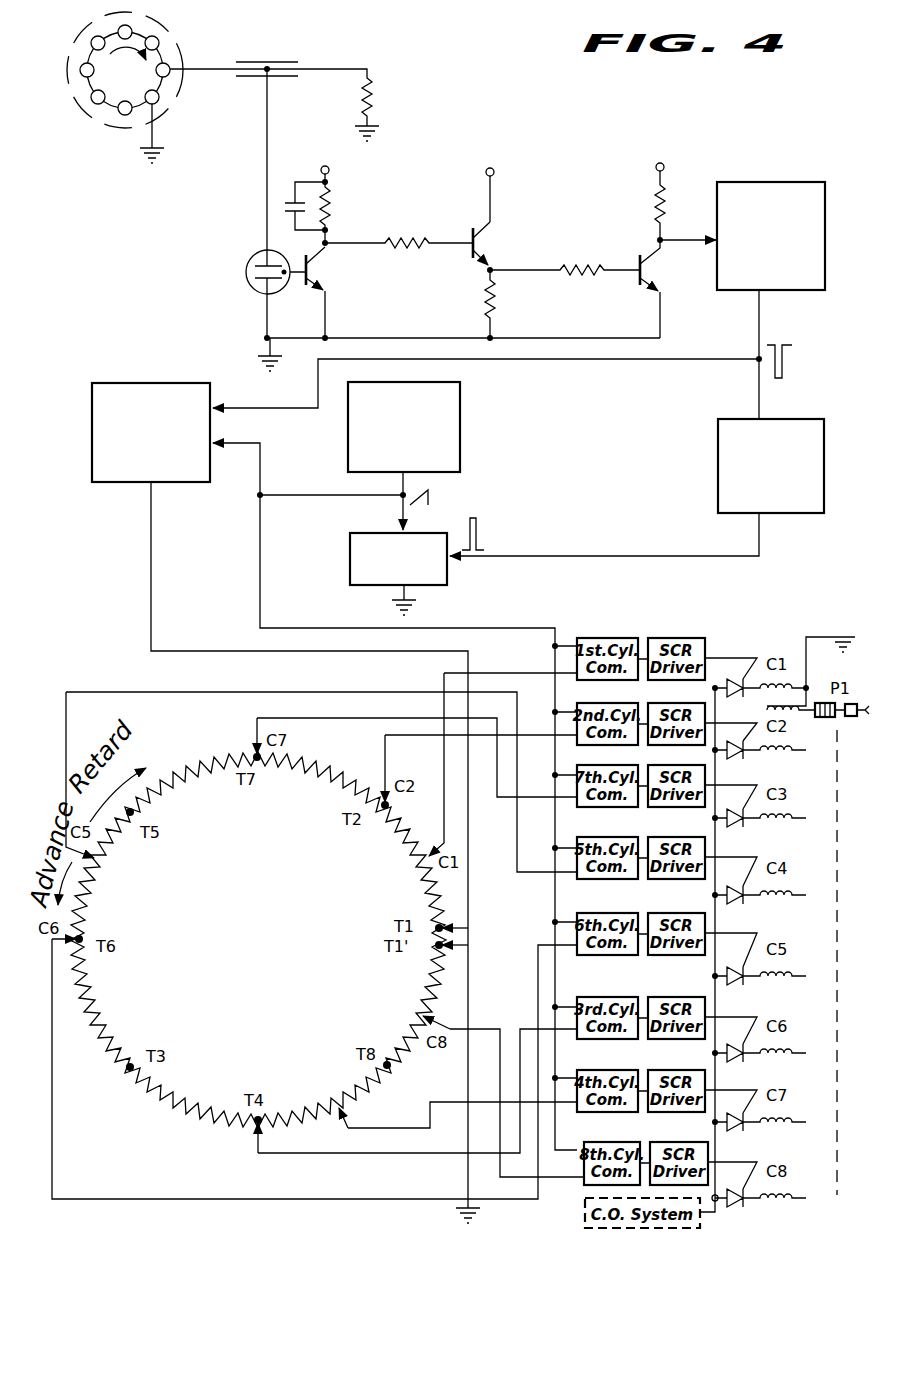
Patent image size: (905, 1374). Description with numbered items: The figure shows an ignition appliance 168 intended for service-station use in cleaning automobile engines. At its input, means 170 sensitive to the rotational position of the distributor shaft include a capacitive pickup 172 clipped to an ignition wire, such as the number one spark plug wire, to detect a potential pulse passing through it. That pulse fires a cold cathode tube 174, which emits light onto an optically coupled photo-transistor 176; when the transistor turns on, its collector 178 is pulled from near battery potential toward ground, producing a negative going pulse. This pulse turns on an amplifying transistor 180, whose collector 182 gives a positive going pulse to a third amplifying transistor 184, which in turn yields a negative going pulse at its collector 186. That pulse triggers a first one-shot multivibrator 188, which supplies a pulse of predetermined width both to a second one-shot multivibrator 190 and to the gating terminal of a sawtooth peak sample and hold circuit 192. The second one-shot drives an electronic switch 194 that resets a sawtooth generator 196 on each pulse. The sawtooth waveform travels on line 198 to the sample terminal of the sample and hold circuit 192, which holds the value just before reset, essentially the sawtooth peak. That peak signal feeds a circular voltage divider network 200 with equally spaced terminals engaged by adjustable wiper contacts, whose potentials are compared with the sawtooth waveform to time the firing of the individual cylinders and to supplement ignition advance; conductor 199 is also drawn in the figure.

The ignition appliance 168 is at (552, 104).
The means sensitive to the rotational position of the distributor shaft 170 is at (222, 206).
The pickup 172 is at (278, 60).
The cold cathode tube 174 is at (246, 272).
The photo-transistor 176 is at (320, 262).
The collector 178 is at (330, 240).
The amplifying transistor 180 is at (497, 240).
The collector 182 is at (497, 270).
The third amplifying transistor 184 is at (652, 242).
The collector 186 is at (666, 268).
The first one-shot multivibrator 188 is at (755, 182).
The second one-shot multivibrator 190 is at (786, 418).
The sawtooth peak sample and hold circuit 192 is at (142, 383).
The electronic switch 194 is at (452, 583).
The sawtooth generator 196 is at (452, 455).
The line 198 is at (300, 495).
The conductor 199 is at (154, 551).
The circular voltage divider network 200 is at (471, 927).